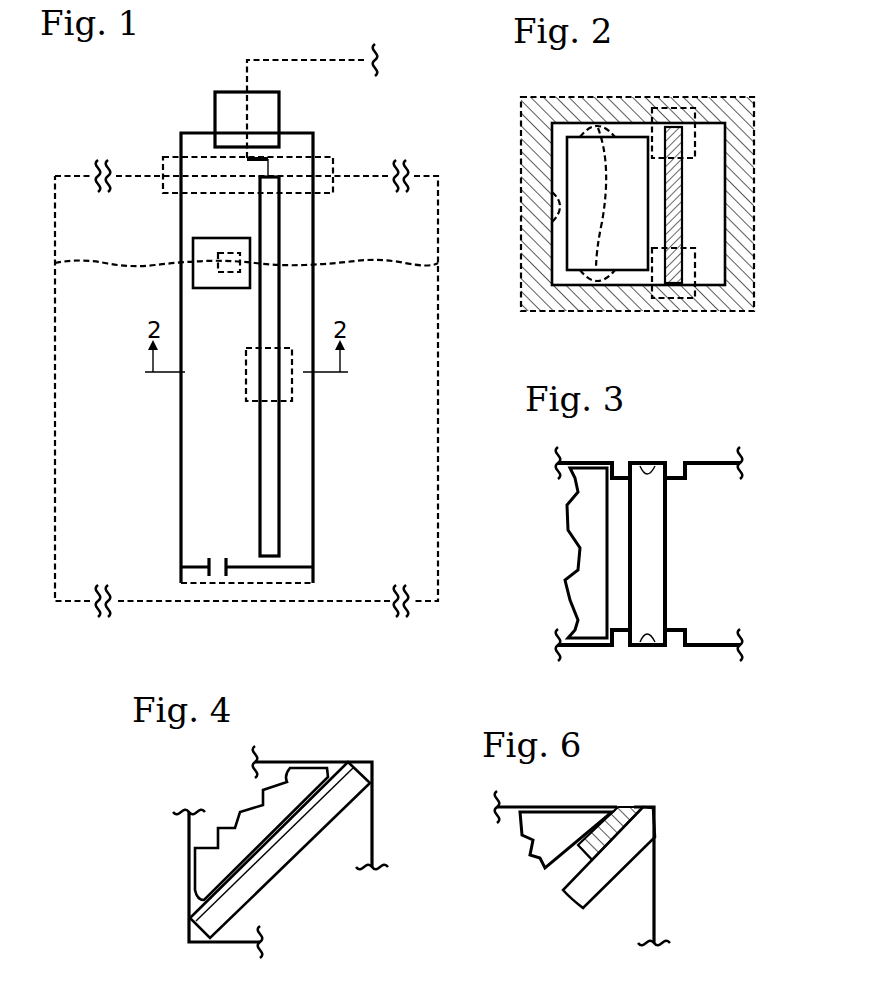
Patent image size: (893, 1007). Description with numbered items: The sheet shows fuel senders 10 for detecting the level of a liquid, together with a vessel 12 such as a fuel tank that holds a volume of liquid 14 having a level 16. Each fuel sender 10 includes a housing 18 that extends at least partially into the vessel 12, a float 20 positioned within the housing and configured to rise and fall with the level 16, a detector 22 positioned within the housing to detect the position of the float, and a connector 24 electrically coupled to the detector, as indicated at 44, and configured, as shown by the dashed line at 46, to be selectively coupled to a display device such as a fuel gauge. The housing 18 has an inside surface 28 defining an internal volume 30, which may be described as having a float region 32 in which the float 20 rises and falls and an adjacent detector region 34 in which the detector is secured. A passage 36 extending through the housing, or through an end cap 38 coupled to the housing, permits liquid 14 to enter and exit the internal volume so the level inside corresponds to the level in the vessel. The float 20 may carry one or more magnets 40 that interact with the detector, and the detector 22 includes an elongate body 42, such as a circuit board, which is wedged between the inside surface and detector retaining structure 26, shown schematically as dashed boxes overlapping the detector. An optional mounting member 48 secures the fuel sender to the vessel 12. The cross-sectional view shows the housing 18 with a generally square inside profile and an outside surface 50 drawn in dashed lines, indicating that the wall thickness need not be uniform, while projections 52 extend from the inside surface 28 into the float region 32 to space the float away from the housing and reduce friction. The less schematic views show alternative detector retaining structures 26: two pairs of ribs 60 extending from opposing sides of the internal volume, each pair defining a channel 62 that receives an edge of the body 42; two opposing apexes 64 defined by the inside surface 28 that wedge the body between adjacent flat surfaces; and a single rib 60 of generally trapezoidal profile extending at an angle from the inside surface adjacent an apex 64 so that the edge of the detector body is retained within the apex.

In FIG. 1, the fuel sender 10 is at (128, 80).
In FIG. 2, the fuel sender 10 is at (758, 45).
In FIG. 3, the fuel sender 10 is at (742, 412).
In FIG. 4, the fuel sender 10 is at (410, 718).
In FIG. 6, the fuel sender 10 is at (663, 760).
In FIG. 1, the vessel 12 is at (438, 383).
In FIG. 1, the liquid 14 is at (395, 440).
In FIG. 1, the level 16 is at (357, 262).
In FIG. 1, the housing 18 is at (316, 406).
In FIG. 2, the housing 18 is at (757, 137).
In FIG. 3, the housing 18 is at (728, 448).
In FIG. 4, the housing 18 is at (355, 722).
In FIG. 6, the housing 18 is at (640, 792).
In FIG. 1, the float 20 is at (226, 288).
In FIG. 2, the float 20 is at (630, 137).
In FIG. 3, the float 20 is at (572, 556).
In FIG. 4, the float 20 is at (236, 812).
In FIG. 6, the float 20 is at (522, 830).
In FIG. 1, the detector 22 is at (258, 441).
In FIG. 2, the detector 22 is at (662, 210).
In FIG. 3, the detector 22 is at (668, 505).
In FIG. 4, the detector 22 is at (299, 852).
In FIG. 6, the detector 22 is at (582, 862).
In FIG. 1, the connector 24 is at (280, 116).
In FIG. 1, the detector retaining structure 26 is at (246, 382).
In FIG. 2, the detector retaining structure 26 is at (718, 108).
In FIG. 3, the detector retaining structure 26 is at (640, 450).
In FIG. 4, the detector retaining structure 26 is at (376, 770).
In FIG. 6, the detector retaining structure 26 is at (625, 790).
In FIG. 1, the inside surface 28 is at (302, 500).
In FIG. 2, the inside surface 28 is at (712, 200).
In FIG. 3, the inside surface 28 is at (718, 465).
In FIG. 4, the inside surface 28 is at (373, 812).
In FIG. 6, the inside surface 28 is at (646, 895).
In FIG. 1, the internal volume 30 is at (241, 536).
In FIG. 1, the float region 32 is at (203, 455).
In FIG. 2, the float region 32 is at (567, 275).
In FIG. 1, the detector region 34 is at (292, 302).
In FIG. 2, the detector region 34 is at (692, 233).
In FIG. 1, the passage 36 is at (206, 553).
In FIG. 1, the end cap 38 is at (283, 586).
In FIG. 1, the magnet 40 is at (228, 253).
In FIG. 1, the body 42 is at (280, 463).
In FIG. 2, the body 42 is at (683, 212).
In FIG. 3, the body 42 is at (668, 548).
In FIG. 4, the body 42 is at (258, 896).
In FIG. 6, the body 42 is at (590, 893).
In FIG. 1, the electrical coupling 44 is at (260, 164).
In FIG. 1, the dashed line 46 is at (289, 60).
In FIG. 1, the mounting member 48 is at (165, 157).
In FIG. 2, the outside surface 50 is at (757, 282).
In FIG. 2, the projection 52 is at (565, 197).
In FIG. 3, the rib 60 is at (665, 478).
In FIG. 6, the rib 60 is at (600, 815).
In FIG. 3, the channel 62 is at (648, 468).
In FIG. 4, the apex 64 is at (352, 760).
In FIG. 6, the apex 64 is at (655, 808).